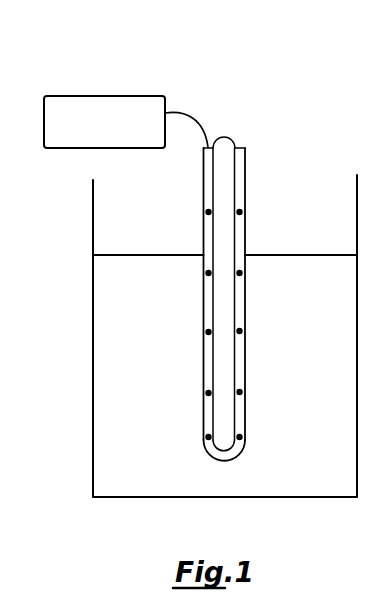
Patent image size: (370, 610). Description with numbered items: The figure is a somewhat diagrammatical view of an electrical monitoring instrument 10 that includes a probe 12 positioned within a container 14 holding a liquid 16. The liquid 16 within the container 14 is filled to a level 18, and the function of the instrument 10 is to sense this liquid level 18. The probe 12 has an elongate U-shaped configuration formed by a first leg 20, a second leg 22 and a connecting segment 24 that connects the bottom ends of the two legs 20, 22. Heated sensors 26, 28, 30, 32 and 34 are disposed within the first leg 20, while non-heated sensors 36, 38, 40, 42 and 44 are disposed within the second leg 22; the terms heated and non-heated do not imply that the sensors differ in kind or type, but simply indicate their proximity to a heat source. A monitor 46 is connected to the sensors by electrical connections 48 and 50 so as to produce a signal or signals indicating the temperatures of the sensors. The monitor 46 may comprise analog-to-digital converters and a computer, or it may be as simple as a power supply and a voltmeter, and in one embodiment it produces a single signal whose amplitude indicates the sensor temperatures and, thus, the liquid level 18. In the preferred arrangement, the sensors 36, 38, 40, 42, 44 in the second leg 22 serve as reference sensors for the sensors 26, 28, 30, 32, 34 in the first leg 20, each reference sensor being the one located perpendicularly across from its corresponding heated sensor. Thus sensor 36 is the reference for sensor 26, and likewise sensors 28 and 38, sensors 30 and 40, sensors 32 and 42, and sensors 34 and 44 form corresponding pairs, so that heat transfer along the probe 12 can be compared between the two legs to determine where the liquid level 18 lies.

The electrical monitoring instrument 10 is at (228, 82).
The probe 12 is at (259, 332).
The container 14 is at (93, 230).
The liquid 16 is at (102, 278).
The liquid level 18 is at (93, 254).
The first leg 20 is at (203, 180).
The second leg 22 is at (245, 182).
The connecting segment 24 is at (236, 465).
The heated sensor 26 is at (208, 212).
The heated sensor 28 is at (208, 273).
The heated sensor 30 is at (208, 332).
The heated sensor 32 is at (208, 393).
The heated sensor 34 is at (208, 437).
The non-heated sensor 36 is at (240, 212).
The non-heated sensor 38 is at (240, 273).
The non-heated sensor 40 is at (240, 331).
The non-heated sensor 42 is at (240, 392).
The non-heated sensor 44 is at (240, 437).
The monitor 46 is at (92, 95).
The electrical connection 48 is at (190, 110).
The electrical connection 50 is at (238, 133).